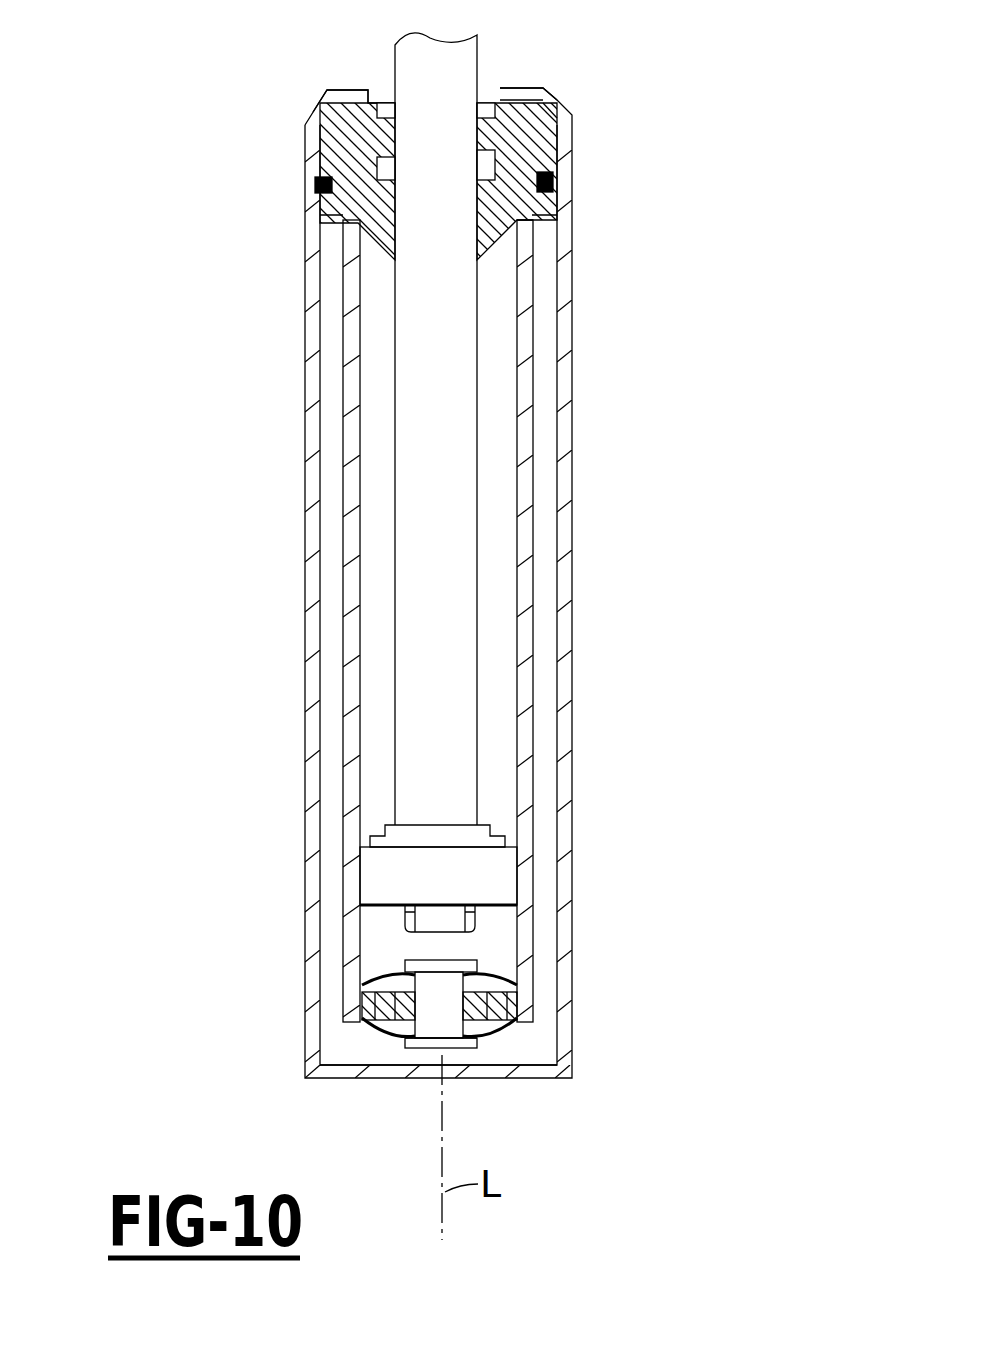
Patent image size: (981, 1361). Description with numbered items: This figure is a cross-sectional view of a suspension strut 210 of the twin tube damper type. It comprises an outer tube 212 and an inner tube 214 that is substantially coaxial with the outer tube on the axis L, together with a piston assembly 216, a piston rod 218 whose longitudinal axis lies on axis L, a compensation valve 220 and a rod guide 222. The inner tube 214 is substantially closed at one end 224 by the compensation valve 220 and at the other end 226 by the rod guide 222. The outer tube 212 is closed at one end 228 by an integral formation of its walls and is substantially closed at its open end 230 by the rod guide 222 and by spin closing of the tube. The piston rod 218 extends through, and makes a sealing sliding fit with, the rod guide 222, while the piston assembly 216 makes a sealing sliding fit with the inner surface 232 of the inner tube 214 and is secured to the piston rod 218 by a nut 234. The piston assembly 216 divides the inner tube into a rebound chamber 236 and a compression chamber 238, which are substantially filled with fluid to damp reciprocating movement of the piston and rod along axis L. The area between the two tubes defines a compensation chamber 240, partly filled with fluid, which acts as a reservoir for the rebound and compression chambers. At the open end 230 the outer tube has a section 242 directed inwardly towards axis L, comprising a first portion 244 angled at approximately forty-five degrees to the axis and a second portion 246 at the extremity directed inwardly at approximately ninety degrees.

The suspension strut 210 is at (647, 327).
The outer tube 212 is at (565, 568).
The inner tube 214 is at (528, 505).
The piston assembly 216 is at (480, 875).
The piston rod 218 is at (460, 698).
The compensation valve 220 is at (362, 1018).
The rod guide 222 is at (340, 132).
The one end of the inner tube 224 is at (533, 1017).
The other end of the inner tube 226 is at (530, 233).
The one end of the outer tube 228 is at (544, 1076).
The open end of the outer tube 230 is at (508, 78).
The inner surface of the inner tube 232 is at (508, 766).
The nut 234 is at (472, 918).
The rebound chamber 236 is at (372, 757).
The compression chamber 238 is at (390, 948).
The compensation chamber 240 is at (330, 852).
The inwardly directed section of the outer tube 242 is at (325, 90).
The first portion 244 is at (555, 123).
The second portion 246 is at (523, 90).